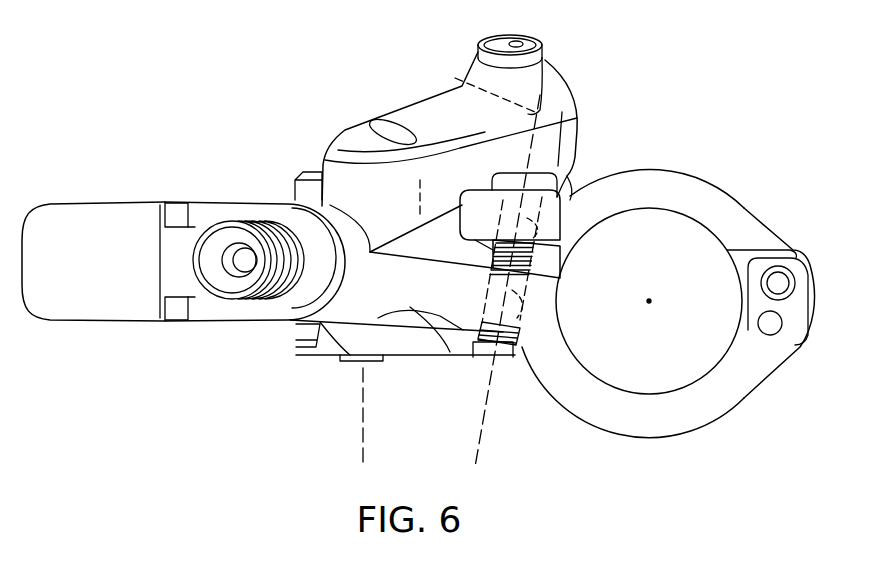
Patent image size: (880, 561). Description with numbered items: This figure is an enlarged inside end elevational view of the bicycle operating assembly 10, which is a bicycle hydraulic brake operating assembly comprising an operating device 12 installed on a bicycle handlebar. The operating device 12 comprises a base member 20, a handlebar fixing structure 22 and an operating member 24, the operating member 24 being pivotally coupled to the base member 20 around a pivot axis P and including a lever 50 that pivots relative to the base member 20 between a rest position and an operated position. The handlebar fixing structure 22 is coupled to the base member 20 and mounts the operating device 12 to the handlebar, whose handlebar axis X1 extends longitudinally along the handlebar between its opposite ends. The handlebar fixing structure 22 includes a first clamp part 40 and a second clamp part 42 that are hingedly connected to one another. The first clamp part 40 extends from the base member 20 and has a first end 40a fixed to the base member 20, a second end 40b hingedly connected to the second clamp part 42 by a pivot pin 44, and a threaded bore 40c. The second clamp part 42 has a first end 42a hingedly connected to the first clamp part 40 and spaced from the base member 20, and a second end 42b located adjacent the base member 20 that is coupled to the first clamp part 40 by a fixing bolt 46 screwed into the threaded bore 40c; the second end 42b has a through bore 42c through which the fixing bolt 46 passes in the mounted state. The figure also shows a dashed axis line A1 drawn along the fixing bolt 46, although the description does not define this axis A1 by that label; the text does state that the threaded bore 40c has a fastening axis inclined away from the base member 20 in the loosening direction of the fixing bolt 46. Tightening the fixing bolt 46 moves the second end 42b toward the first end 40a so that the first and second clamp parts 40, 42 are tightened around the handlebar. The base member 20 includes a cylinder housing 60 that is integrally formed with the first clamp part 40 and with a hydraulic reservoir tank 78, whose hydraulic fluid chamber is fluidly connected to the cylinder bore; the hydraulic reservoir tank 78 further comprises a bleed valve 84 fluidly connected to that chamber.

The operating assembly 10 is at (686, 62).
The operating device 12 is at (359, 97).
The base member 20 is at (300, 169).
The handlebar fixing structure 22 is at (705, 176).
The operating member 24 is at (100, 326).
The first clamp part 40 is at (603, 411).
The first end 40a is at (435, 303).
The second end 40b is at (785, 343).
The threaded bore 40c is at (520, 320).
The second clamp part 42 is at (645, 193).
The first end 42a is at (788, 250).
The second end 42b is at (587, 200).
The through bore 42c is at (537, 244).
The pivot pin 44 is at (766, 323).
The fixing bolt 46 is at (497, 174).
The lever 50 is at (110, 202).
The cylinder housing 60 is at (301, 350).
The hydraulic reservoir tank 78 is at (413, 100).
The bleed valve 84 is at (525, 45).
The bolt axis A1 is at (480, 440).
The pivot axis P is at (360, 418).
The handlebar axis X1 is at (650, 305).